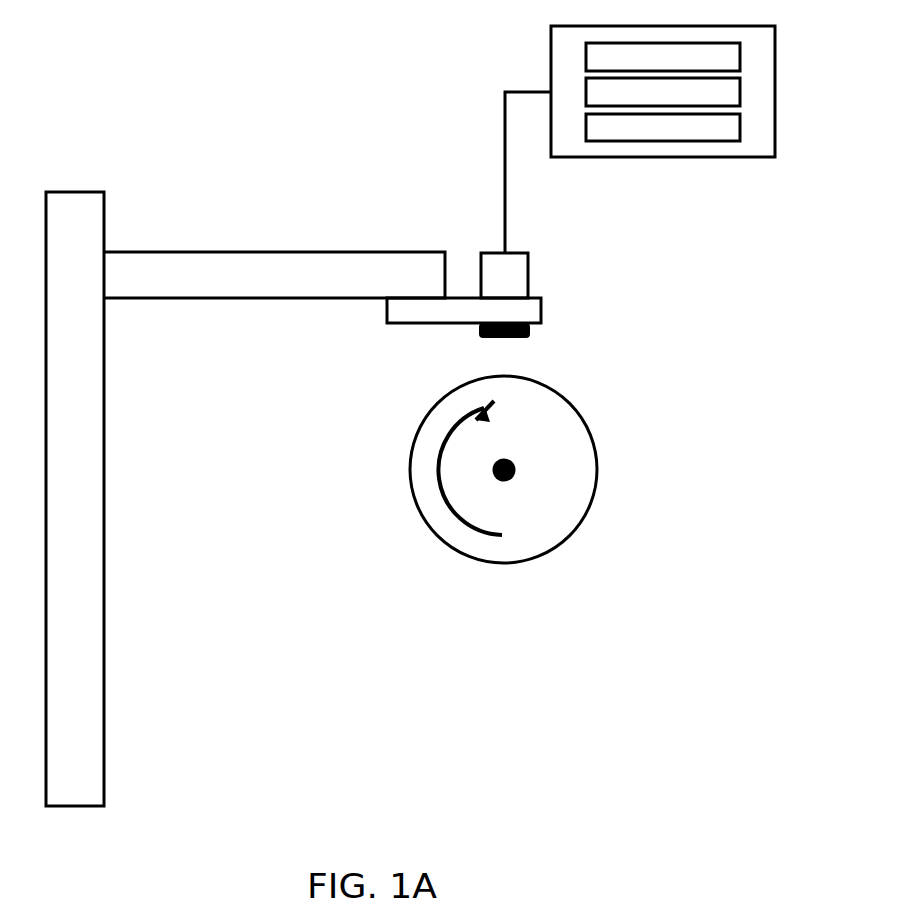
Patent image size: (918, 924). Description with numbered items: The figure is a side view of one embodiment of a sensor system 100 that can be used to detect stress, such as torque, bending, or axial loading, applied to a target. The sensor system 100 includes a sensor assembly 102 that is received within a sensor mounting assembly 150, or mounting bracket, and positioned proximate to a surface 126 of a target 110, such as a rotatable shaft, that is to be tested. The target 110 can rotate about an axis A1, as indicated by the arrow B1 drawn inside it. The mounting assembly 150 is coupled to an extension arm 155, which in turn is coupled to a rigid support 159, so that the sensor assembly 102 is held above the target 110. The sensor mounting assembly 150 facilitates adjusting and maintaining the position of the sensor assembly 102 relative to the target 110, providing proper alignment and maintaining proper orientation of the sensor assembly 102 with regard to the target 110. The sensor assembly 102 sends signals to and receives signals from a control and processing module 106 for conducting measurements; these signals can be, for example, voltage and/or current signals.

The sensor system 100 is at (168, 78).
The rigid support 159 is at (78, 205).
The extension arm 155 is at (290, 262).
The sensor mounting assembly 150 is at (427, 318).
The sensor assembly 102 is at (541, 253).
The control and processing module 106 is at (683, 158).
The target 110 is at (595, 410).
The surface 126 is at (596, 441).
The axis A1 is at (516, 466).
The arrow B1 is at (488, 408).